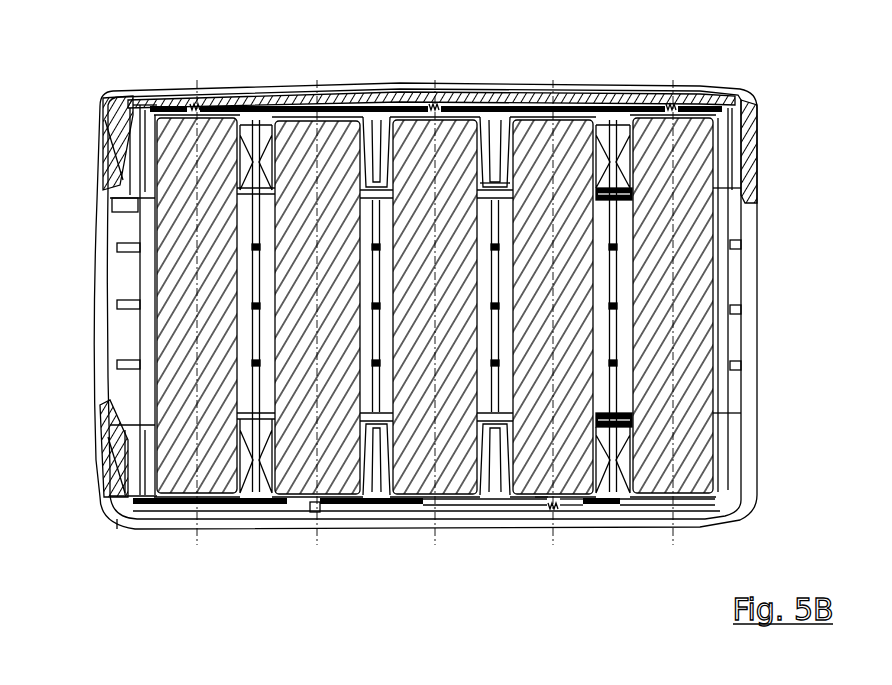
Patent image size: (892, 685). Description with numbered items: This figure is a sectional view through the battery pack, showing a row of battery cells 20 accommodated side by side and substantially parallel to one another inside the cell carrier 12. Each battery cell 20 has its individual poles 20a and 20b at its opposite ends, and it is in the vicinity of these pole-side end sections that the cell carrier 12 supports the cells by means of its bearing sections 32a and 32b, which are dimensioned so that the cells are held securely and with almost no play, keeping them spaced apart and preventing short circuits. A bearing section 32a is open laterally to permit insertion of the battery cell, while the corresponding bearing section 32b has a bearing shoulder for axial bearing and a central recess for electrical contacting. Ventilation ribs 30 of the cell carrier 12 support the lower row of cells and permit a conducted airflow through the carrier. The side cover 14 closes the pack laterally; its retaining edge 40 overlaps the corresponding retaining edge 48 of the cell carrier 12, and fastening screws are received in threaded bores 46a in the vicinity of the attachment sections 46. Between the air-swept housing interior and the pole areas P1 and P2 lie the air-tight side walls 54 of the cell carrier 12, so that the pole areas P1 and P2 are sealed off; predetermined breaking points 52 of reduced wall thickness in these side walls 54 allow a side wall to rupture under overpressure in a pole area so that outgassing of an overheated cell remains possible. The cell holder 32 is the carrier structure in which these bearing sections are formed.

The cell carrier 12 is at (118, 203).
The side cover 14 is at (689, 102).
The battery cell 20 is at (217, 118).
The pole 20a is at (167, 107).
The pole 20b is at (190, 508).
The ventilation rib 30 is at (123, 306).
The cell holder 32 is at (140, 462).
The bearing section 32a is at (453, 116).
The bearing section 32b is at (372, 138).
The retaining edge 40 is at (747, 150).
The attachment section 46 is at (247, 497).
The threaded bore 46a is at (259, 470).
The retaining edge 48 is at (738, 130).
The predetermined breaking point 52 is at (383, 108).
The side wall 54 is at (493, 182).
The pole area P1 is at (582, 76).
The pole area P2 is at (538, 577).